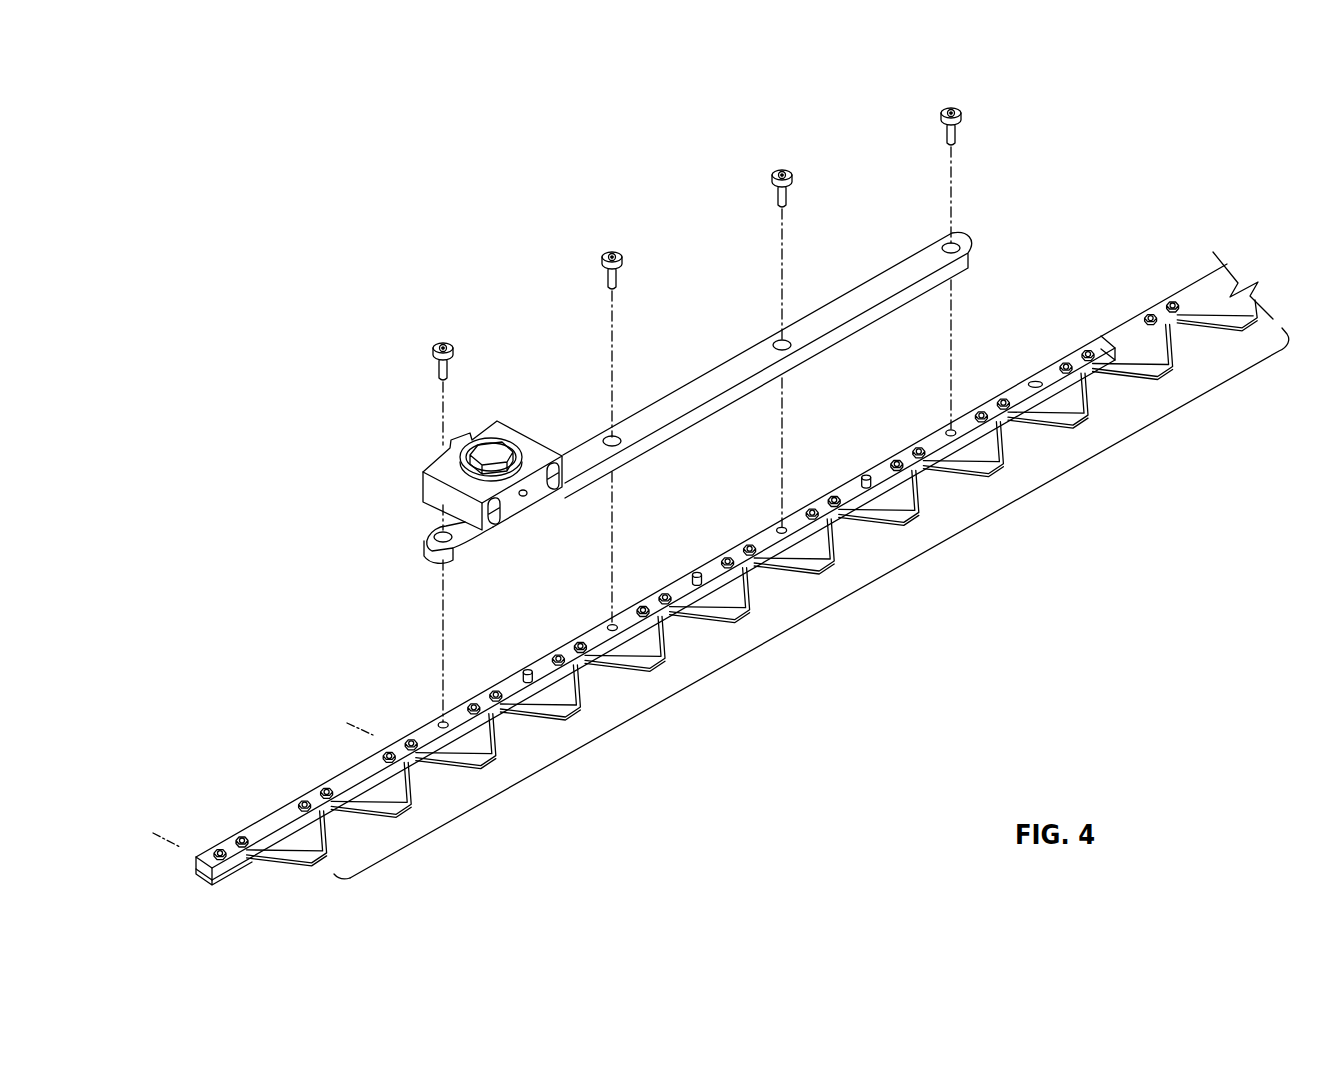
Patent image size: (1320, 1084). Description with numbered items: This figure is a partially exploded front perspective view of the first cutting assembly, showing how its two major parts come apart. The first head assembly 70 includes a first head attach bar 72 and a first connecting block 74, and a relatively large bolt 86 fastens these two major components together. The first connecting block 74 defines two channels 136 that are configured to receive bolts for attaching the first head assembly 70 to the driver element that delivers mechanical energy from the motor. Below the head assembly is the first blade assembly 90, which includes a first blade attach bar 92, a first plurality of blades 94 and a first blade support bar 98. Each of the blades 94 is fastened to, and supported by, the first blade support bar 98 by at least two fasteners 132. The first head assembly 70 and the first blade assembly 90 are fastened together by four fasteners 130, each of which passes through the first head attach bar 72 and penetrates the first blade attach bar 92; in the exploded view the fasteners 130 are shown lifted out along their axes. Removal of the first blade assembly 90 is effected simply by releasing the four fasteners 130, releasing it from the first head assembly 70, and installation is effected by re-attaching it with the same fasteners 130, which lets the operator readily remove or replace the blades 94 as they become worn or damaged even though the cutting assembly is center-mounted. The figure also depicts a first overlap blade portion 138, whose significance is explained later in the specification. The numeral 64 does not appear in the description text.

The fasteners 130 is at (443, 343).
The first head attach bar 72 is at (857, 303).
The first blade attach bar 92 is at (1053, 377).
The bolt 86 is at (492, 443).
The first connecting block 74 is at (506, 471).
The first head assembly 70 is at (474, 471).
The channels 136 is at (556, 488).
The fasteners 132 is at (243, 836).
The blades 64 is at (752, 588).
The first plurality of blades 94 is at (812, 610).
The first overlap blade portion 138 is at (342, 720).
The first blade assembly 90 is at (206, 889).
The first blade support bar 98 is at (238, 867).